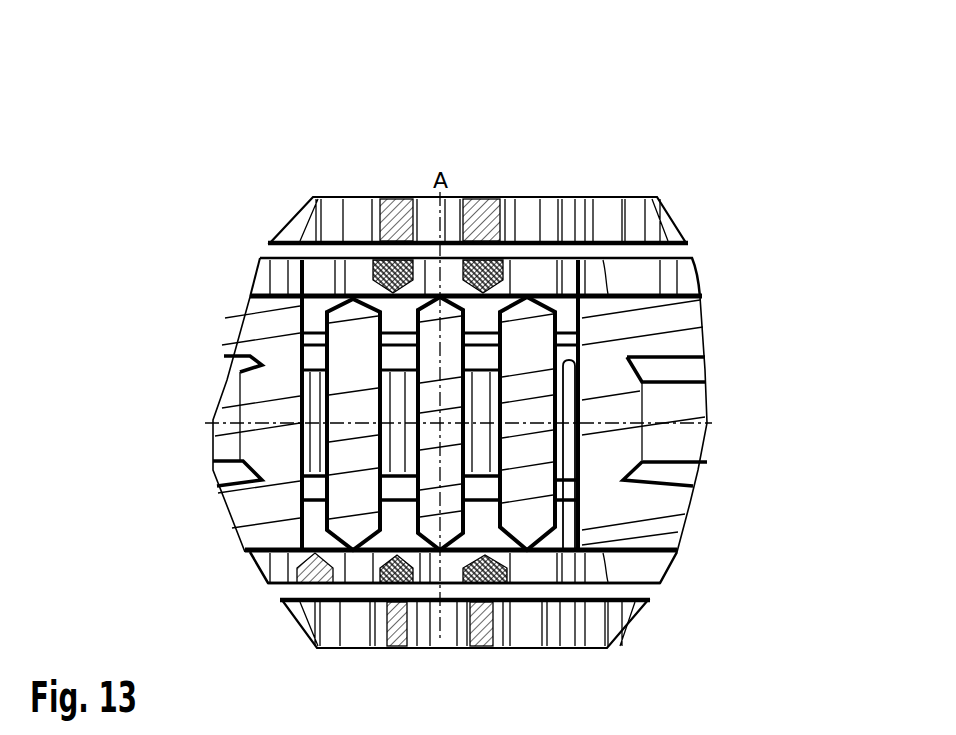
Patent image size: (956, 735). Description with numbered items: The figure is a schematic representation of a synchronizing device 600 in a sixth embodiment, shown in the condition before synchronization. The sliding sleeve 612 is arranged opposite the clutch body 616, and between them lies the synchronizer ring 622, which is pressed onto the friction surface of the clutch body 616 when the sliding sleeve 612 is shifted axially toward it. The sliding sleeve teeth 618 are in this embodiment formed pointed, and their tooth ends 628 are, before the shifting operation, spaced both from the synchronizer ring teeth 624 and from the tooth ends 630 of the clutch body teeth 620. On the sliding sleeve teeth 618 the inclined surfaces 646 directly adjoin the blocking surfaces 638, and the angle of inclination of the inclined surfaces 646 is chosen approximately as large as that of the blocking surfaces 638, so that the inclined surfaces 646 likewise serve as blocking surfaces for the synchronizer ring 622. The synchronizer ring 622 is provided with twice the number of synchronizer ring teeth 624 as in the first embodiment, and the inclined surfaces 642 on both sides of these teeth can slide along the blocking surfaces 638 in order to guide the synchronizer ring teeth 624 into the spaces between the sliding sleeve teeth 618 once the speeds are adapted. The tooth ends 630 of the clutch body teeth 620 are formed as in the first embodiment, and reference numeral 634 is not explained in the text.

The synchronizing device 600 is at (180, 58).
The sliding sleeve 612 is at (721, 393).
The clutch body 616 is at (700, 220).
The sliding sleeve teeth 618 is at (357, 350).
The clutch body teeth 620 is at (400, 250).
The synchronizer ring 622 is at (711, 282).
The synchronizer ring teeth 624 is at (373, 280).
The tooth ends 628 is at (321, 330).
The tooth ends 630 is at (501, 231).
The stator tooth 634 is at (390, 220).
The blocking surfaces 638 is at (313, 303).
The inclined surfaces 642 is at (458, 268).
The inclined surfaces 646 is at (334, 308).